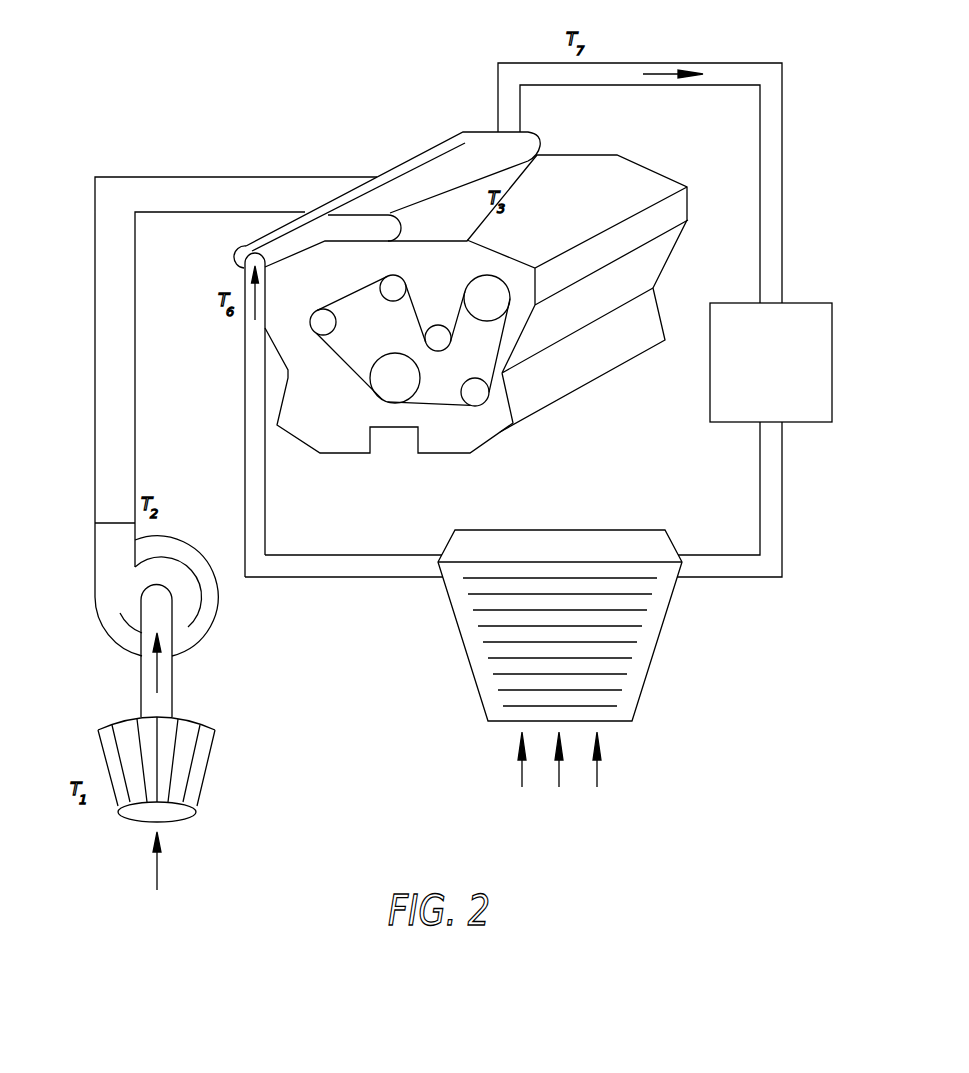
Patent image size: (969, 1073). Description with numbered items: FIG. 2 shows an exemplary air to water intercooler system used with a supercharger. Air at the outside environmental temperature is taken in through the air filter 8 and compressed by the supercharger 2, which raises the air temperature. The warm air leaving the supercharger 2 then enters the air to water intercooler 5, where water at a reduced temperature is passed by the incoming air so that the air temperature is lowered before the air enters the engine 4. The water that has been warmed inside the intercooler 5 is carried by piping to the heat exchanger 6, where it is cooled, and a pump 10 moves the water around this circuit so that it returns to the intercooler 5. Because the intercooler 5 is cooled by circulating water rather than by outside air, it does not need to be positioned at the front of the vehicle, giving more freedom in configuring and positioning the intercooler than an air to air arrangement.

The supercharger 2 is at (95, 578).
The engine 4 is at (542, 392).
The air to water intercooler 5 is at (407, 180).
The heat exchanger 6 is at (643, 648).
The air filter 8 is at (202, 802).
The pump 10 is at (815, 303).